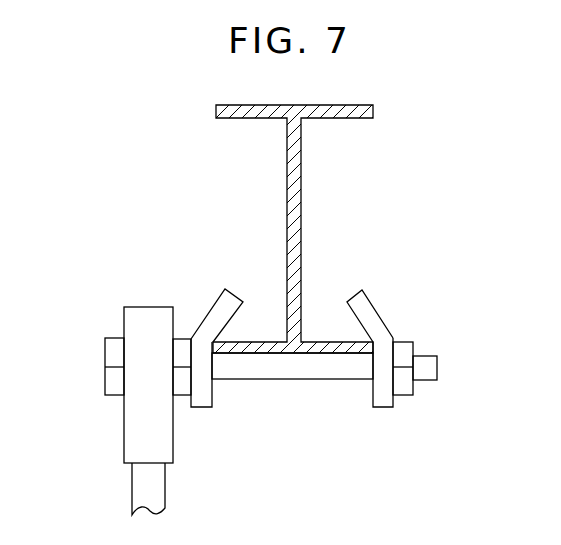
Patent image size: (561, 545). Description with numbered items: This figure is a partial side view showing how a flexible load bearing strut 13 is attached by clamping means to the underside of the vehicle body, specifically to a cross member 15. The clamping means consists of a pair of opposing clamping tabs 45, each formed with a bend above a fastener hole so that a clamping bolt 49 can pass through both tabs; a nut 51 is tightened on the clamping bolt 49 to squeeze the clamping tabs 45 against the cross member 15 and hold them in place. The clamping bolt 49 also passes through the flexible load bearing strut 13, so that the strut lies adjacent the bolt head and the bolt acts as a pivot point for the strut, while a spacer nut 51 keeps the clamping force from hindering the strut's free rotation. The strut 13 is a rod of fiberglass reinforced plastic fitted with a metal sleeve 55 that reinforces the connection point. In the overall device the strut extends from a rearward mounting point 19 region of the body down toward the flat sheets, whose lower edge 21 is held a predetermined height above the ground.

The cross member 15 is at (375, 114).
The clamping tab 45 is at (225, 288).
The nut 51 is at (183, 338).
The rearward mounting point 19 is at (242, 379).
The lower edge 21 is at (437, 367).
The clamping bolt 49 is at (105, 367).
The metal sleeve 55 is at (124, 447).
The flexible load bearing strut 13 is at (167, 492).